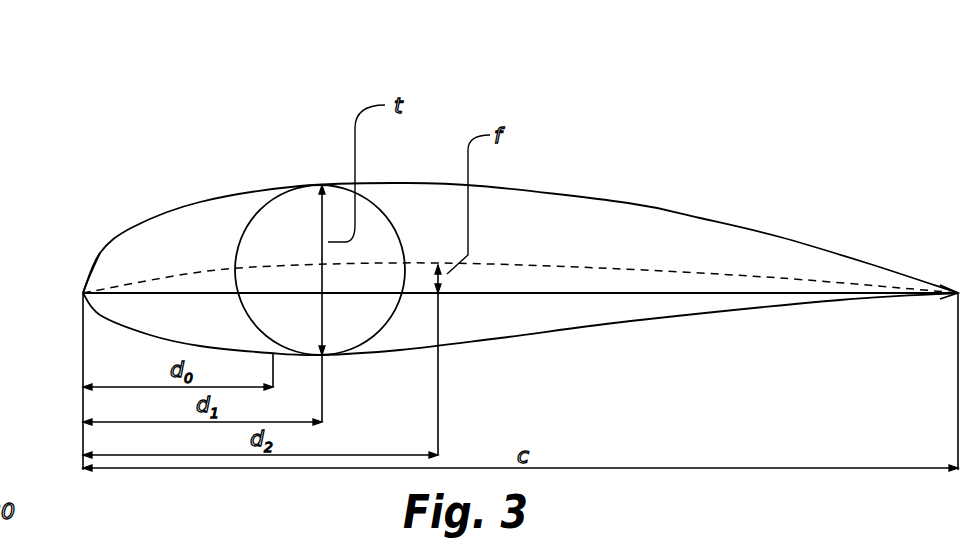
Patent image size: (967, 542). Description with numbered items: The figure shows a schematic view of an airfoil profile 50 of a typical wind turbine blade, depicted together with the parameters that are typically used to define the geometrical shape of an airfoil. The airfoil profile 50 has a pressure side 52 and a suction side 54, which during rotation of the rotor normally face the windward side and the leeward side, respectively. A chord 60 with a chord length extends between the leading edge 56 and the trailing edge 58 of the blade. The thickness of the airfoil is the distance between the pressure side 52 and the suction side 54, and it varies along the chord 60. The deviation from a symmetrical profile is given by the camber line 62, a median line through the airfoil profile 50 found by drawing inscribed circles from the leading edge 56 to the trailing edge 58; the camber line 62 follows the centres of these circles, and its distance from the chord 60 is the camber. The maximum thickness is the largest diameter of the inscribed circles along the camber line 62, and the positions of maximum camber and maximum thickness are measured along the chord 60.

The airfoil profile 50 is at (502, 211).
The pressure side 52 is at (693, 320).
The suction side 54 is at (628, 203).
The leading edge 56 is at (83, 293).
The trailing edge 58 is at (958, 290).
The chord 60 is at (737, 292).
The camber line 62 is at (508, 262).